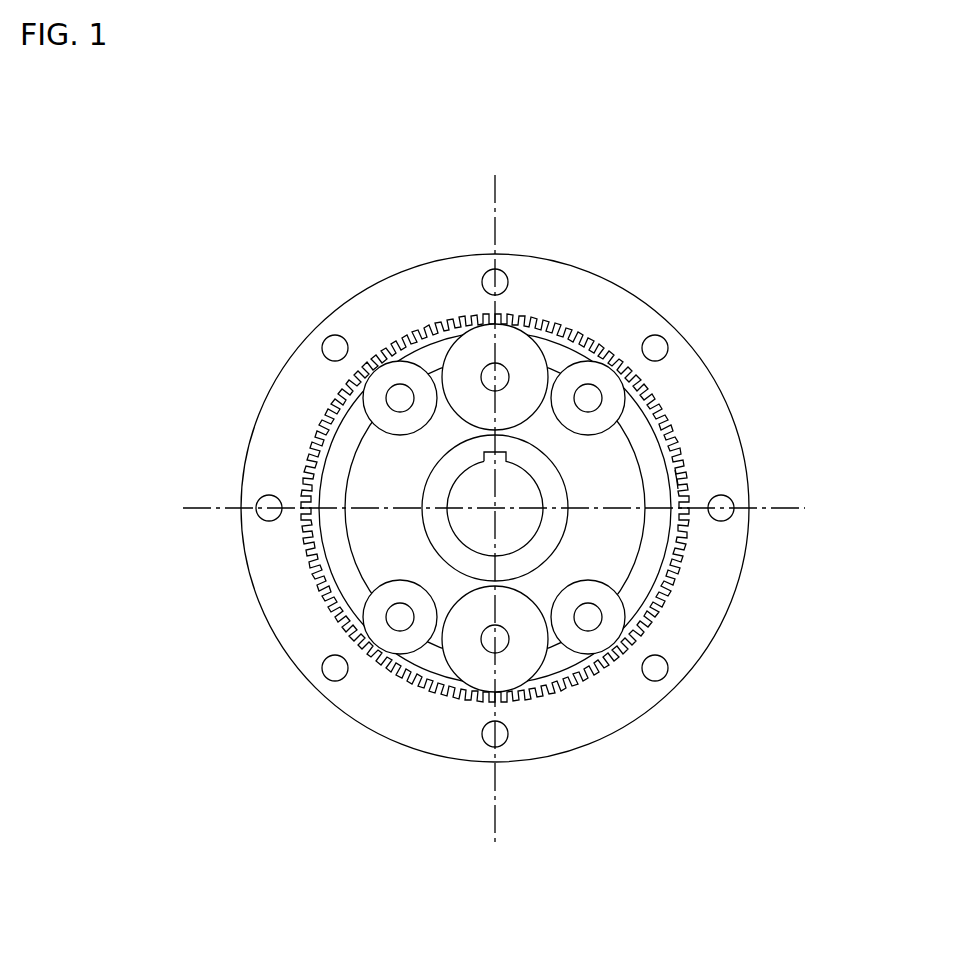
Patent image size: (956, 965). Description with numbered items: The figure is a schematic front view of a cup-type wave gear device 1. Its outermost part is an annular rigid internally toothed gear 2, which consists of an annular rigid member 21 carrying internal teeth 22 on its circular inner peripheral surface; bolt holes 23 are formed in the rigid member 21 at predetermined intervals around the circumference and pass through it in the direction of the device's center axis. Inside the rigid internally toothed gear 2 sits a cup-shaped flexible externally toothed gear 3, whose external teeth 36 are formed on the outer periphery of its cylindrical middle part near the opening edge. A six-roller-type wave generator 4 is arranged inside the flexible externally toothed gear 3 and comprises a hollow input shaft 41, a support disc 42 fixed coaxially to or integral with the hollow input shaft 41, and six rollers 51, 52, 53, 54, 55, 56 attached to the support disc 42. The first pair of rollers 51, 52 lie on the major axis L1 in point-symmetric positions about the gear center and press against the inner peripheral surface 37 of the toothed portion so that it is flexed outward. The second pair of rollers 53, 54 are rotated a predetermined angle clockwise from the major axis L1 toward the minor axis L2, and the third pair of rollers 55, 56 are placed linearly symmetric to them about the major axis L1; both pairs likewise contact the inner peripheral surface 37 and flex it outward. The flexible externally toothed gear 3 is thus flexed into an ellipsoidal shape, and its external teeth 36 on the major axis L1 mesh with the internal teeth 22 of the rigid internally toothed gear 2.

The wave gear device 1 is at (495, 480).
The rigid internally toothed gear 2 is at (495, 478).
The rigid member 21 is at (647, 318).
The internal teeth 22 is at (653, 403).
The bolt holes 23 is at (658, 352).
The flexible externally toothed gear 3 is at (560, 508).
The external teeth 36 is at (680, 443).
The inner peripheral surface 37 is at (658, 470).
The wave generator 4 is at (562, 525).
The hollow input shaft 41 is at (550, 528).
The support disc 42 is at (607, 527).
The first roller 51 is at (473, 347).
The first roller 52 is at (470, 675).
The second roller 53 is at (582, 365).
The second roller 54 is at (393, 645).
The third roller 55 is at (393, 372).
The third roller 56 is at (592, 638).
The major axis L1 is at (495, 813).
The minor axis L2 is at (213, 507).